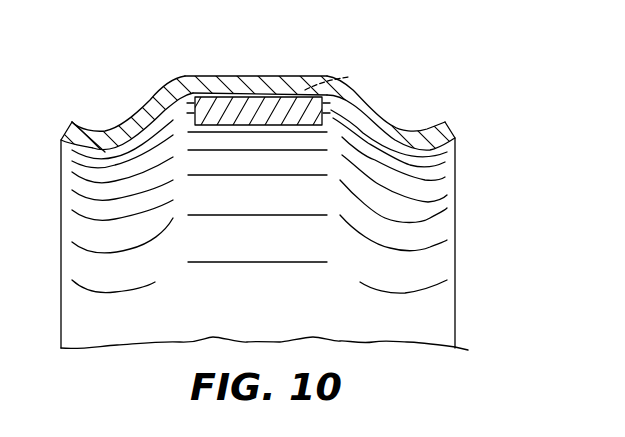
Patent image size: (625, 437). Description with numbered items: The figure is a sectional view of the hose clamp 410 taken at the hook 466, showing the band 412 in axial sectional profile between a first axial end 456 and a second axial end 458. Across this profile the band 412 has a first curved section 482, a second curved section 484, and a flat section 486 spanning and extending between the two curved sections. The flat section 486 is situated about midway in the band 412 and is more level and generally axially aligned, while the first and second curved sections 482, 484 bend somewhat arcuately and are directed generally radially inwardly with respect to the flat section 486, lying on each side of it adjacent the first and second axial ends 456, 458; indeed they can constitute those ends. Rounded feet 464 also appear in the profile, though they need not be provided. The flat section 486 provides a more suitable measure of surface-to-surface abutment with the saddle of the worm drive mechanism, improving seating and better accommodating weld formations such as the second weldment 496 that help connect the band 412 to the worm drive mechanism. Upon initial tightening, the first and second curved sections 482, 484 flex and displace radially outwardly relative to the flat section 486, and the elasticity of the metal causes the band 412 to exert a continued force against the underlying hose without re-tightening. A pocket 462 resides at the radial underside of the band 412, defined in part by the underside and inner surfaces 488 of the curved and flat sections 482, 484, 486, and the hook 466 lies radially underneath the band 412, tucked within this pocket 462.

The hose clamp 410 is at (60, 82).
The band 412 is at (466, 219).
The first axial end 456 is at (72, 267).
The second axial end 458 is at (442, 308).
The pocket 462 is at (272, 249).
The rounded feet 464 is at (98, 164).
The hook 466 is at (253, 112).
The first curved section 482 is at (167, 72).
The second curved section 484 is at (343, 72).
The flat section 486 is at (347, 67).
The underside and inner surfaces 488 is at (138, 323).
The second weldment 496 is at (348, 76).